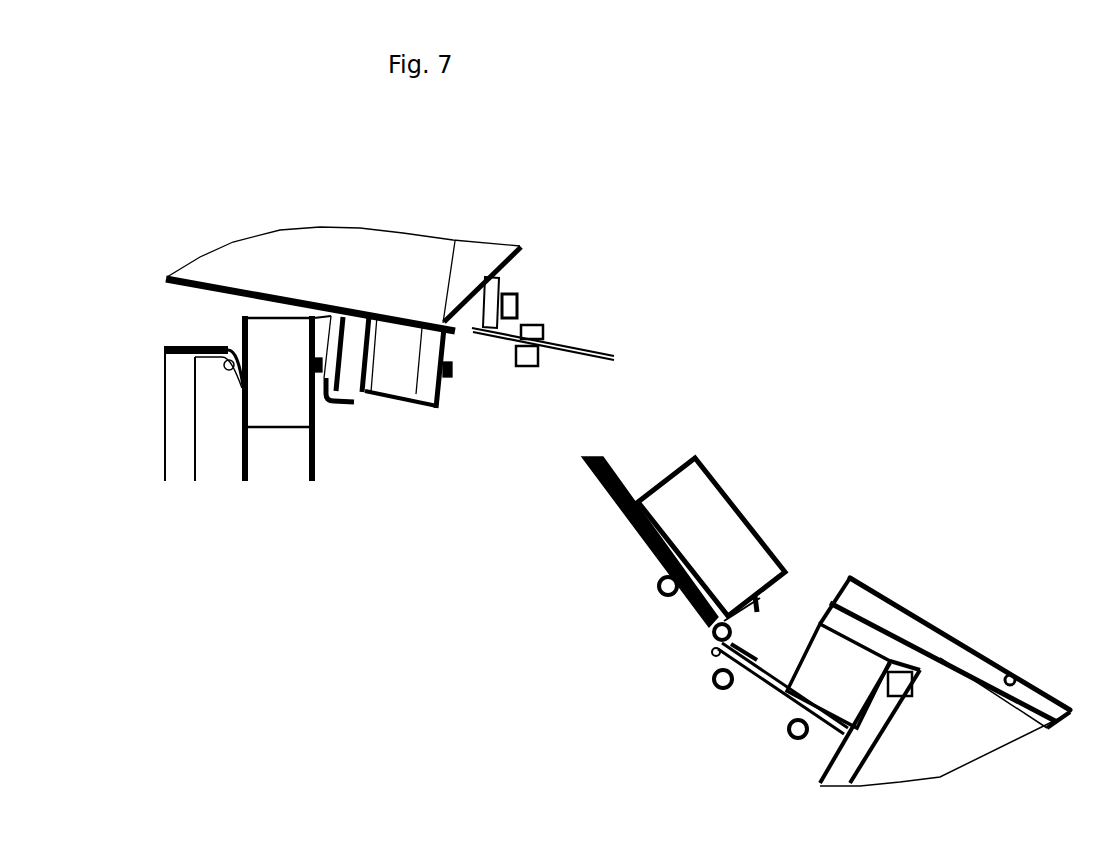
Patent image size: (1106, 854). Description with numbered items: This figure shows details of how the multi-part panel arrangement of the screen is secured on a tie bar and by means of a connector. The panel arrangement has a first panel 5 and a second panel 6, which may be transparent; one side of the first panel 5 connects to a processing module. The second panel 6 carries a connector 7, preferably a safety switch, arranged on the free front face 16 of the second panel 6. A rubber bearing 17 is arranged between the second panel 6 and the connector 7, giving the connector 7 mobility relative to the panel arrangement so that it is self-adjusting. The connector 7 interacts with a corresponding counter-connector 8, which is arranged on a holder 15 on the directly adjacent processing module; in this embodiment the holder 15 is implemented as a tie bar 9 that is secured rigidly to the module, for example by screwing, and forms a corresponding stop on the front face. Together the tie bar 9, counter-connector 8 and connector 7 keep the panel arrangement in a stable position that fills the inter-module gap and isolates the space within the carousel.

The first panel 5 is at (627, 485).
The second panel 6 is at (213, 452).
The connector 7 is at (347, 378).
The counter-connector 8 is at (415, 420).
The holder 15 is at (387, 357).
The tie bar 9 is at (843, 655).
The free front face 16 is at (268, 355).
The rubber bearing 17 is at (315, 318).